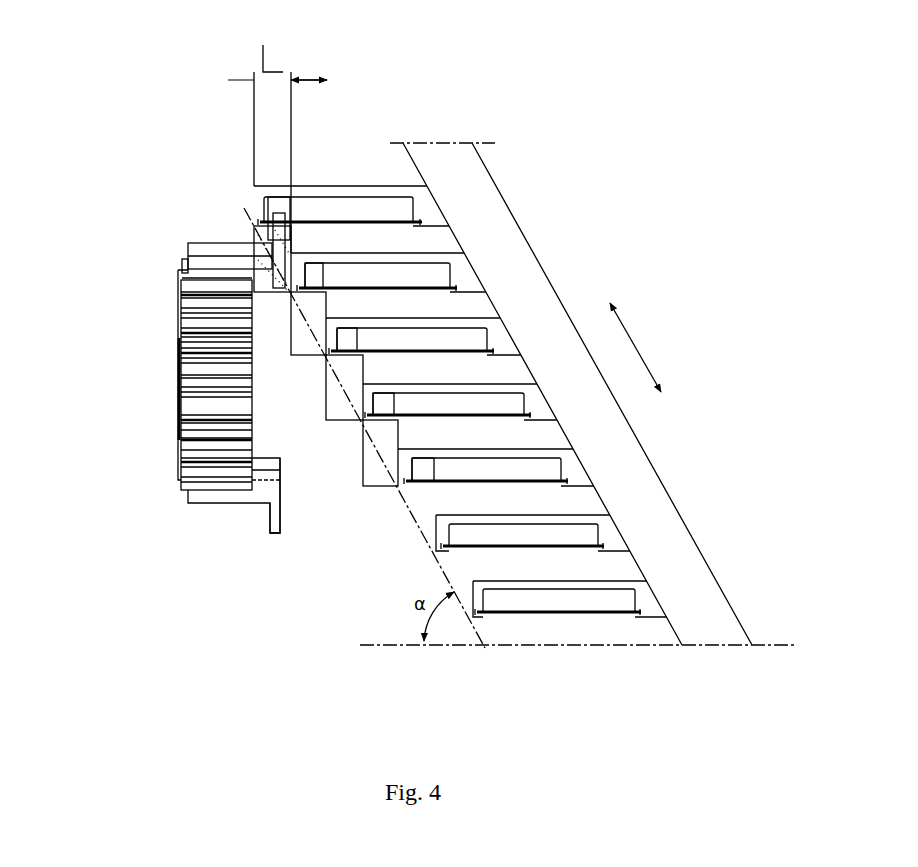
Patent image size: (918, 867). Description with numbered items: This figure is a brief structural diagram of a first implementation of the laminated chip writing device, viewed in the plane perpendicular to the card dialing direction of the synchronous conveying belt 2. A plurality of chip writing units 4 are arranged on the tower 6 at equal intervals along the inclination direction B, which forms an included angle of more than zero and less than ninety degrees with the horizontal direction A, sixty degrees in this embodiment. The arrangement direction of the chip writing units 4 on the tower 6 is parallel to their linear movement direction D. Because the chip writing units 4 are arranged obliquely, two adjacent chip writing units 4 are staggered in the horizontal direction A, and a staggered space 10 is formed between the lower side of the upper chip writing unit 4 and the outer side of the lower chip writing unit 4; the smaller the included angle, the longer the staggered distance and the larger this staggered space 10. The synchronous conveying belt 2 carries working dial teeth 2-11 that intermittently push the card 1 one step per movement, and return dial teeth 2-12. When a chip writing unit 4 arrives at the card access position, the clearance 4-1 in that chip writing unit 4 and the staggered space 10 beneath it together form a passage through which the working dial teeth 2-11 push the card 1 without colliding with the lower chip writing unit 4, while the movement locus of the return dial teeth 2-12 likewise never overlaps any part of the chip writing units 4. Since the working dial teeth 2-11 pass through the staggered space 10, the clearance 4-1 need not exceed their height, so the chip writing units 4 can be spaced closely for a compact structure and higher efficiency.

The card 1 is at (337, 222).
The synchronous conveying belt 2 is at (194, 349).
The working dial teeth 2-11 is at (270, 233).
The return dial teeth 2-12 is at (278, 513).
The chip writing unit 4 is at (313, 184).
The clearance 4-1 is at (262, 189).
The tower 6 is at (512, 322).
The staggered space 10 is at (246, 256).
The linear movement direction D is at (639, 347).
The horizontal direction A is at (378, 648).
The inclination direction B is at (468, 646).